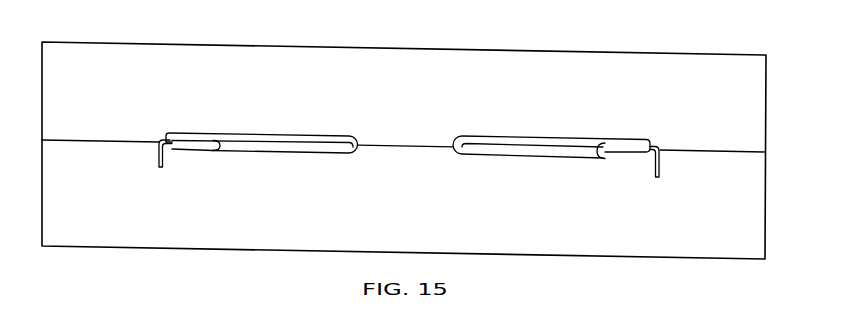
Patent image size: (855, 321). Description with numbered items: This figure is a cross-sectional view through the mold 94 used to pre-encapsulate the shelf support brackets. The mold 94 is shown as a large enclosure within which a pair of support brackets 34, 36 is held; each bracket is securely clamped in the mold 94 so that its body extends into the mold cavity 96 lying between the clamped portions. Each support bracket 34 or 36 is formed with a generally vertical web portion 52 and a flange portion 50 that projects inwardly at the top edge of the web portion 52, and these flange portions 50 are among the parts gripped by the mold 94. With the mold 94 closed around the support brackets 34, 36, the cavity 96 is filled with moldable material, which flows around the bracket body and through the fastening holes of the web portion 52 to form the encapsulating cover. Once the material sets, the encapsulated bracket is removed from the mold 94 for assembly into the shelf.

The mold 94 is at (136, 41).
The cavity 96 is at (360, 140).
The support bracket 36 is at (309, 138).
The support bracket 34 is at (505, 140).
The web portion 52 is at (278, 147).
The flange portion 50 is at (157, 163).